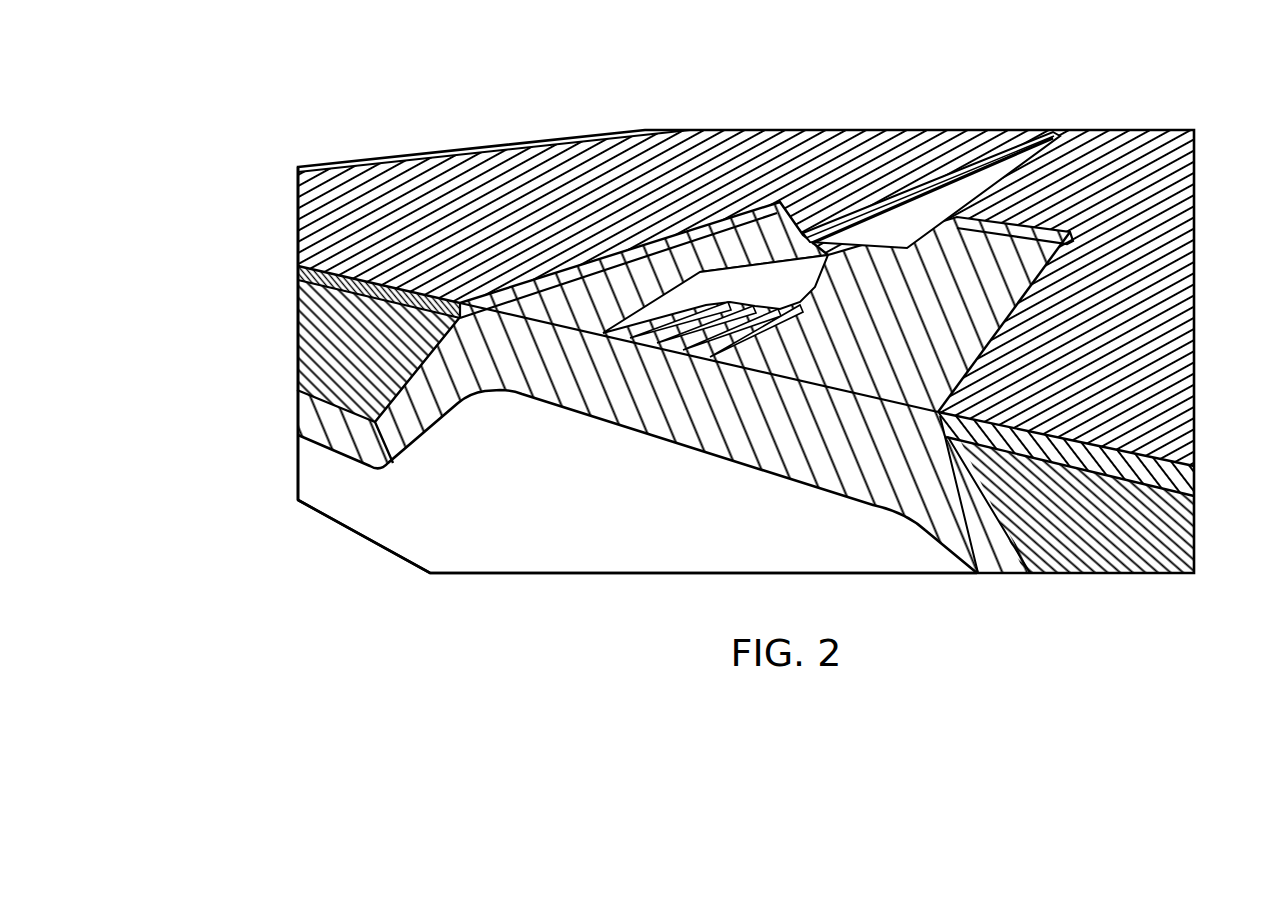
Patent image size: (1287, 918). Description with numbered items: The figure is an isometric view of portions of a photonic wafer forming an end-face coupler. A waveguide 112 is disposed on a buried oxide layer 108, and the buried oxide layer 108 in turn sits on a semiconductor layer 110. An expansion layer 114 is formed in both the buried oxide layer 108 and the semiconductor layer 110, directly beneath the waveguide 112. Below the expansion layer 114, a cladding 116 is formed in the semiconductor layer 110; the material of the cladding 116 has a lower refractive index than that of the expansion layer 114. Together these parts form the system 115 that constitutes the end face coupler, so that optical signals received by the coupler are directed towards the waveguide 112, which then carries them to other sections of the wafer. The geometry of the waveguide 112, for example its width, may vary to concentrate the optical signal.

The buried oxide layer 108 is at (1196, 292).
The semiconductor layer 110 is at (1196, 531).
The waveguide 112 is at (1058, 129).
The expansion layer 114 is at (604, 405).
The system 115 is at (250, 500).
The cladding 116 is at (608, 556).